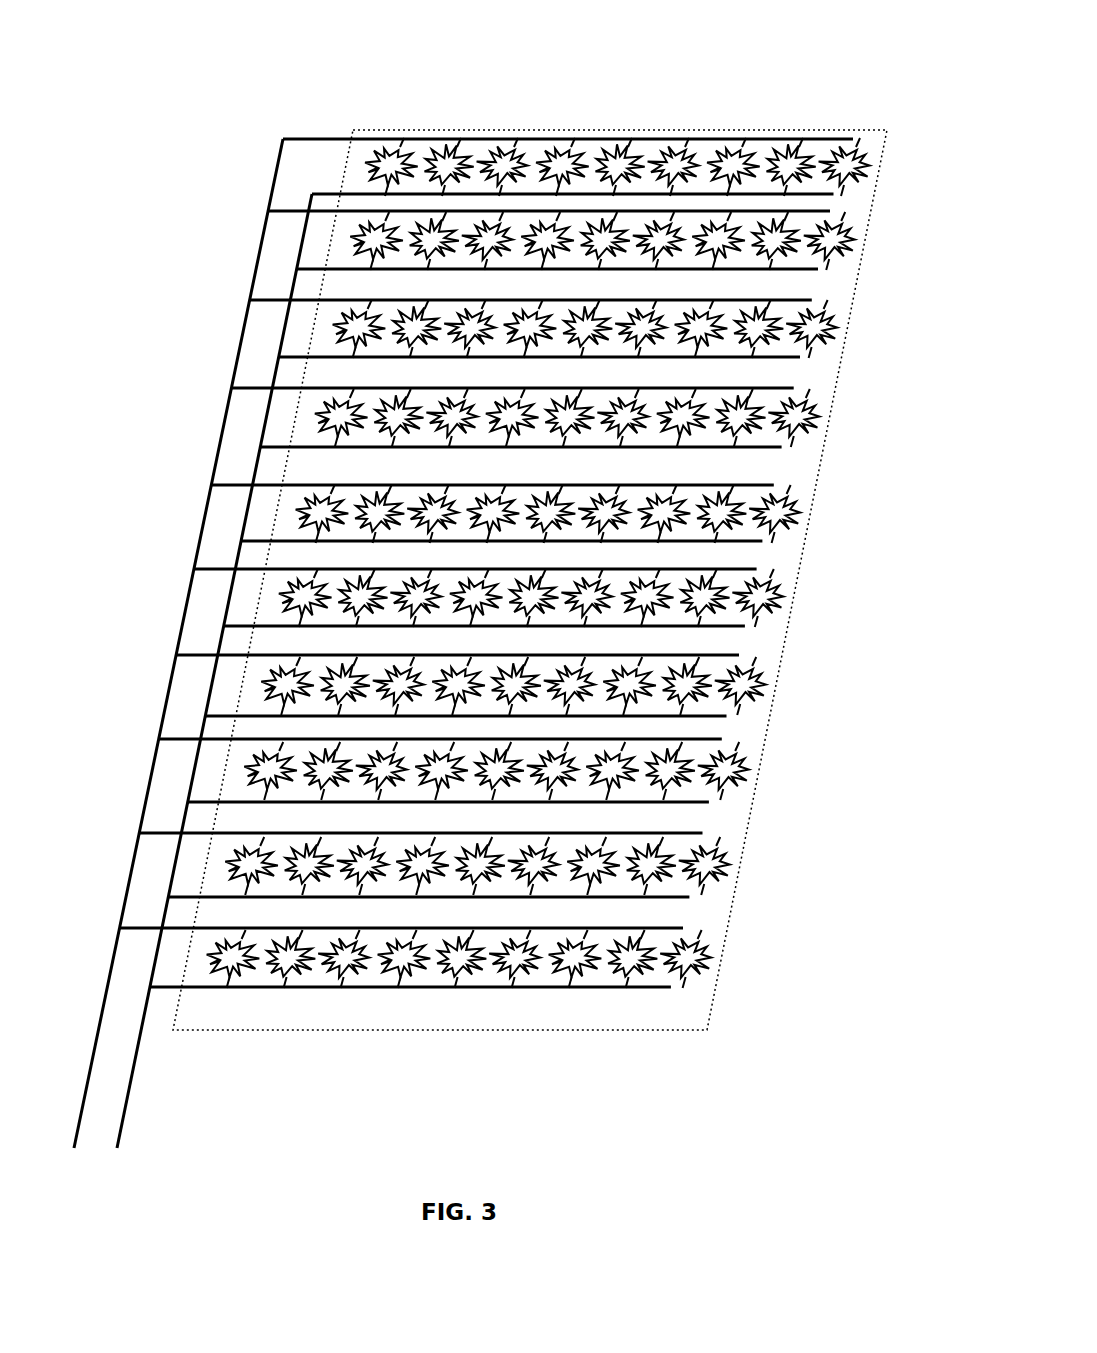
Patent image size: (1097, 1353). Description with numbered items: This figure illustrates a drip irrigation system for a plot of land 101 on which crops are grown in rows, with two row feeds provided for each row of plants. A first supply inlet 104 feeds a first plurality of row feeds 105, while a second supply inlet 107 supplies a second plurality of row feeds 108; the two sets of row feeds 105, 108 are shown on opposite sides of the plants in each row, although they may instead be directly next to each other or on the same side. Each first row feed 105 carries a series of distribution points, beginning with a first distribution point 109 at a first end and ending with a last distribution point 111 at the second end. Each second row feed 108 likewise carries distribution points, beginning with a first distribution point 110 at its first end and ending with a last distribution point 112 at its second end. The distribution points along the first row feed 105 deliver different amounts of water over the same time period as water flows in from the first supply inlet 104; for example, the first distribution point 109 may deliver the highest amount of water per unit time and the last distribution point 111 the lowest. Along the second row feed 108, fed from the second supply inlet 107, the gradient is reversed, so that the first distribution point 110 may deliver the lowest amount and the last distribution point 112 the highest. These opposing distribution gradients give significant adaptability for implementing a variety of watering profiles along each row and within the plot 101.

The plot of land 101 is at (687, 130).
The first supply inlet 104 is at (133, 1083).
The first plurality of row feeds 105 is at (332, 194).
The second supply inlet 107 is at (120, 944).
The second plurality of row feeds 108 is at (540, 138).
The first distribution point 109 is at (388, 187).
The first distribution point 110 is at (383, 150).
The last distribution point 111 is at (833, 192).
The last distribution point 112 is at (853, 150).